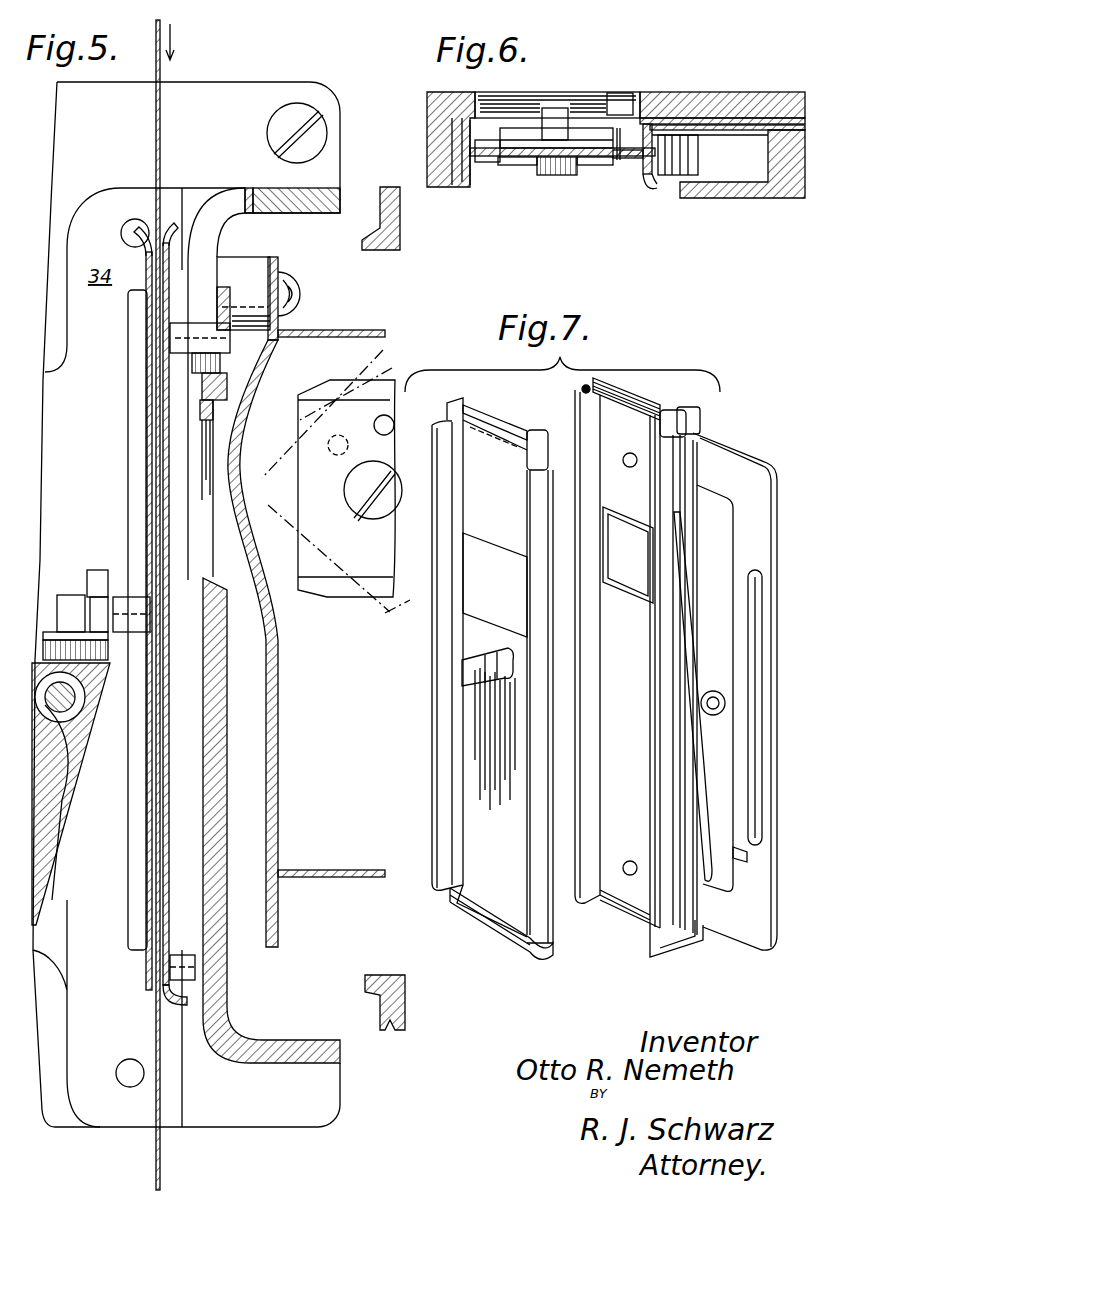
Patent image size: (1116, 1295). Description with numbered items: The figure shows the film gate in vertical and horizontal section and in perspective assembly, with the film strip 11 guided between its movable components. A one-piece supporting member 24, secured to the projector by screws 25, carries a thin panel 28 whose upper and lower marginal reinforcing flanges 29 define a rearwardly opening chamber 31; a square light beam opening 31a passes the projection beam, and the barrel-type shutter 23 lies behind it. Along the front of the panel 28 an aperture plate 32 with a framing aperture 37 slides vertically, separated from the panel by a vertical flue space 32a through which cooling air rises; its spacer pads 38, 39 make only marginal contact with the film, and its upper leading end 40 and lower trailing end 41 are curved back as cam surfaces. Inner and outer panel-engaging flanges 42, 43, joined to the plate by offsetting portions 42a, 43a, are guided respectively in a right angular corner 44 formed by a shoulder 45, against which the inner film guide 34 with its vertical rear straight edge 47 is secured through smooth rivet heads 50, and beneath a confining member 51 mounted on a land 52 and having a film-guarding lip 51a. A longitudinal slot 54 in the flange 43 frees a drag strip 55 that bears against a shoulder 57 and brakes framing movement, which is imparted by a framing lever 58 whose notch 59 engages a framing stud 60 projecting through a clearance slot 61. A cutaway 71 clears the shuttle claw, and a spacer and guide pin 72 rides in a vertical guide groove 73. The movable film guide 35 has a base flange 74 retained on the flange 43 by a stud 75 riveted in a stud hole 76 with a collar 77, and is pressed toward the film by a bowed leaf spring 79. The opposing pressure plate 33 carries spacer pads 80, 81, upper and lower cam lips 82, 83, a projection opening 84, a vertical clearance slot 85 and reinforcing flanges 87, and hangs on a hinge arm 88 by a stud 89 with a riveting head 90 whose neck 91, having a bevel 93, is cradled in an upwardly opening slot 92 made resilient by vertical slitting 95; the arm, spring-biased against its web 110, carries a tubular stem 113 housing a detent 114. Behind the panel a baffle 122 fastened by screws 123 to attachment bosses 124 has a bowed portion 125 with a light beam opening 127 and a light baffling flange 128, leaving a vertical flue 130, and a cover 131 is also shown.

In FIG. 5, the film strip 11 is at (161, 137).
In FIG. 6, the film strip 11 is at (522, 160).
In FIG. 5, the shutter 23 is at (350, 598).
In FIG. 5, the supporting member 24 is at (68, 161).
In FIG. 5, the screws 25 is at (272, 131).
In FIG. 5, the panel 28 is at (215, 858).
In FIG. 6, the panel 28 is at (680, 93).
In FIG. 5, the upper and lower marginal reinforcing flanges 29 is at (323, 213).
In FIG. 5, the rearwardly opening chamber 31 is at (258, 1000).
In FIG. 5, the light beam opening 31a is at (212, 570).
In FIG. 6, the light beam opening 31a is at (505, 105).
In FIG. 5, the aperture plate 32 is at (170, 770).
In FIG. 6, the aperture plate 32 is at (625, 148).
In FIG. 7, the aperture plate 32 is at (620, 800).
In FIG. 5, the vertical flue space 32a is at (192, 1016).
In FIG. 6, the vertical flue space 32a is at (600, 135).
In FIG. 5, the pressure plate 33 is at (146, 813).
In FIG. 6, the pressure plate 33 is at (620, 166).
In FIG. 7, the pressure plate 33 is at (518, 860).
In FIG. 6, the inner film guide 34 is at (470, 190).
In FIG. 6, the movable film guide 35 is at (650, 182).
In FIG. 7, the movable film guide 35 is at (702, 418).
In FIG. 5, the framing aperture 37 is at (170, 478).
In FIG. 6, the framing aperture 37 is at (615, 130).
In FIG. 7, the framing aperture 37 is at (606, 560).
In FIG. 6, the spacer pad 38 is at (555, 123).
In FIG. 7, the spacer pad 38 is at (588, 422).
In FIG. 6, the spacer pad 39 is at (620, 103).
In FIG. 7, the spacer pad 39 is at (680, 410).
In FIG. 7, the upper leading end 40 is at (650, 403).
In FIG. 7, the lower trailing end 41 is at (690, 937).
In FIG. 6, the inner panel-engaging flange 42 is at (490, 95).
In FIG. 7, the inner panel-engaging flange 42 is at (583, 390).
In FIG. 6, the offsetting portion 42a is at (540, 110).
In FIG. 6, the outer panel-engaging flange 43 is at (710, 125).
In FIG. 7, the outer panel-engaging flange 43 is at (735, 462).
In FIG. 6, the offsetting portion 43a is at (672, 95).
In FIG. 6, the right angular corner 44 is at (440, 105).
In FIG. 6, the shoulder 45 is at (452, 150).
In FIG. 6, the vertical rear straight edge 47 is at (430, 130).
In FIG. 5, the rivet heads 50 is at (130, 233).
In FIG. 6, the confining member 51 is at (780, 200).
In FIG. 6, the lip 51a is at (735, 198).
In FIG. 6, the land 52 is at (790, 110).
In FIG. 6, the longitudinal slot 54 is at (760, 120).
In FIG. 7, the longitudinal slot 54 is at (745, 850).
In FIG. 6, the drag strip 55 is at (725, 120).
In FIG. 7, the drag strip 55 is at (770, 788).
In FIG. 6, the shoulder 57 is at (770, 120).
In FIG. 5, the framing lever 58 is at (225, 385).
In FIG. 5, the notch 59 is at (243, 293).
In FIG. 5, the framing stud 60 is at (147, 365).
In FIG. 7, the framing stud 60 is at (628, 460).
In FIG. 5, the clearance slot 61 is at (212, 248).
In FIG. 7, the cutaway 71 is at (590, 622).
In FIG. 5, the spacer and guide pin 72 is at (147, 970).
In FIG. 6, the spacer and guide pin 72 is at (588, 145).
In FIG. 7, the spacer and guide pin 72 is at (630, 861).
In FIG. 5, the vertical guide groove 73 is at (200, 800).
In FIG. 6, the vertical guide groove 73 is at (575, 140).
In FIG. 6, the base flange 74 is at (718, 132).
In FIG. 7, the base flange 74 is at (730, 538).
In FIG. 6, the stud 75 is at (695, 176).
In FIG. 7, the stud 75 is at (708, 714).
In FIG. 7, the stud hole 76 is at (715, 690).
In FIG. 6, the collar 77 is at (710, 135).
In FIG. 7, the collar 77 is at (724, 704).
In FIG. 6, the bowed leaf spring 79 is at (668, 176).
In FIG. 7, the bowed leaf spring 79 is at (700, 640).
In FIG. 6, the spacer pad 80 is at (492, 162).
In FIG. 7, the spacer pad 80 is at (458, 407).
In FIG. 6, the spacer pad 81 is at (600, 166).
In FIG. 7, the spacer pad 81 is at (536, 437).
In FIG. 7, the upper cam lip 82 is at (497, 430).
In FIG. 7, the lower cam lip 83 is at (497, 930).
In FIG. 5, the projection opening 84 is at (152, 453).
In FIG. 6, the projection opening 84 is at (550, 178).
In FIG. 7, the projection opening 84 is at (500, 560).
In FIG. 7, the vertical clearance slot 85 is at (455, 835).
In FIG. 6, the reinforcing flanges 87 is at (472, 172).
In FIG. 7, the reinforcing flanges 87 is at (440, 660).
In FIG. 5, the hinge arm 88 is at (82, 696).
In FIG. 5, the stud 89 is at (70, 598).
In FIG. 7, the stud 89 is at (470, 672).
In FIG. 5, the riveting head 90 is at (150, 640).
In FIG. 5, the neck 91 is at (97, 610).
In FIG. 7, the neck 91 is at (490, 660).
In FIG. 5, the upwardly opening slot 92 is at (97, 570).
In FIG. 5, the bevel 93 is at (95, 640).
In FIG. 5, the vertical slitting 95 is at (48, 640).
In FIG. 5, the web 110 is at (70, 810).
In FIG. 5, the tubular stem 113 is at (45, 706).
In FIG. 5, the detent 114 is at (70, 694).
In FIG. 5, the baffle 122 is at (280, 832).
In FIG. 5, the screws 123 is at (290, 285).
In FIG. 5, the attachment bosses 124 is at (268, 276).
In FIG. 5, the bowed portion 125 is at (250, 592).
In FIG. 5, the light beam opening 127 is at (240, 520).
In FIG. 5, the light baffling flange 128 is at (333, 329).
In FIG. 5, the vertical flue 130 is at (253, 905).
In FIG. 5, the cover 131 is at (392, 1032).
In FIG. 6, the cover 131 is at (393, 187).